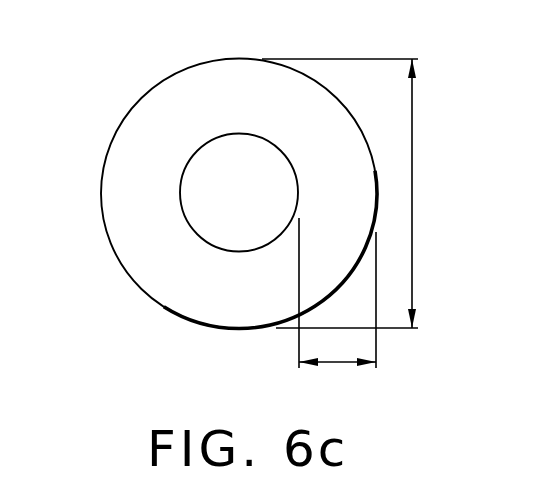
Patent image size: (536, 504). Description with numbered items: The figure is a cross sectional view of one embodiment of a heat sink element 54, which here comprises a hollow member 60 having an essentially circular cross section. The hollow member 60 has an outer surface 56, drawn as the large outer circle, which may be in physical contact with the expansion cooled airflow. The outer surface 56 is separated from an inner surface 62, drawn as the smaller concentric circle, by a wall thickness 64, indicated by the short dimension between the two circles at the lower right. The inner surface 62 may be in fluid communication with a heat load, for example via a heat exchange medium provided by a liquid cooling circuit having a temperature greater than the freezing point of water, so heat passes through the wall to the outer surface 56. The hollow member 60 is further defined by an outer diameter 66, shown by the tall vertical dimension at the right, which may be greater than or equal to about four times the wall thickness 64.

The heat sink element 54 is at (190, 53).
The outer surface 56 is at (166, 307).
The hollow member 60 is at (143, 150).
The inner surface 62 is at (200, 148).
The wall thickness 64 is at (338, 364).
The outer diameter 66 is at (412, 193).